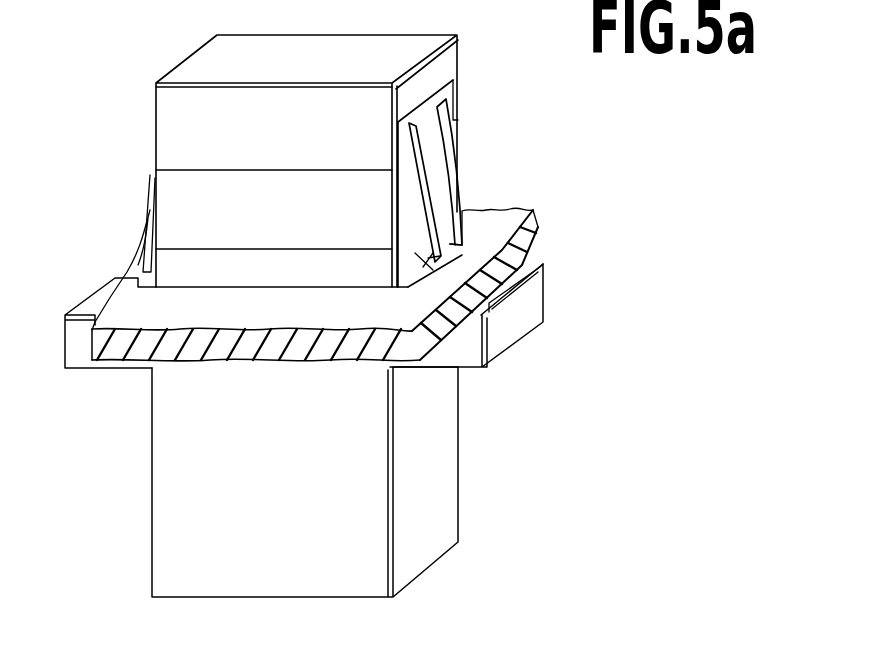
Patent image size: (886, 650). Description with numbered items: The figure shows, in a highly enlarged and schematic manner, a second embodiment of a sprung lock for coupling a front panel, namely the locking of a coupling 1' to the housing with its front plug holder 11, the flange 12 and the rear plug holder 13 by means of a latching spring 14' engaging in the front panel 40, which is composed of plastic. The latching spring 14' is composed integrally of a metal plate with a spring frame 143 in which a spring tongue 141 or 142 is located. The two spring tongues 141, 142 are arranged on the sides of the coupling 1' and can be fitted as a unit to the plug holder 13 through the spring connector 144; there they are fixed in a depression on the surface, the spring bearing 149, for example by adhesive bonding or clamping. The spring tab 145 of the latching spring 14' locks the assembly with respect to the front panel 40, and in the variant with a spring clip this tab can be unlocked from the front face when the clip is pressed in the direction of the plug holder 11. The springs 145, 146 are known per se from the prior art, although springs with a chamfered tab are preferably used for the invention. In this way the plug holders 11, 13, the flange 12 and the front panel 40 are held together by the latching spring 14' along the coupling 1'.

The rear plug holder 13 is at (163, 123).
The spring connector 144 is at (183, 203).
The spring frame 143 is at (443, 92).
The spring tongue 141 is at (435, 146).
The latching spring 14' is at (490, 192).
The spring tongue 142 is at (140, 213).
The spring 146 is at (142, 280).
The front panel 40 is at (507, 223).
The spring tab 145 is at (433, 265).
The spring bearing 149 is at (522, 289).
The flange 12 is at (527, 317).
The front plug holder 11 is at (180, 470).
The coupling 1' is at (142, 626).